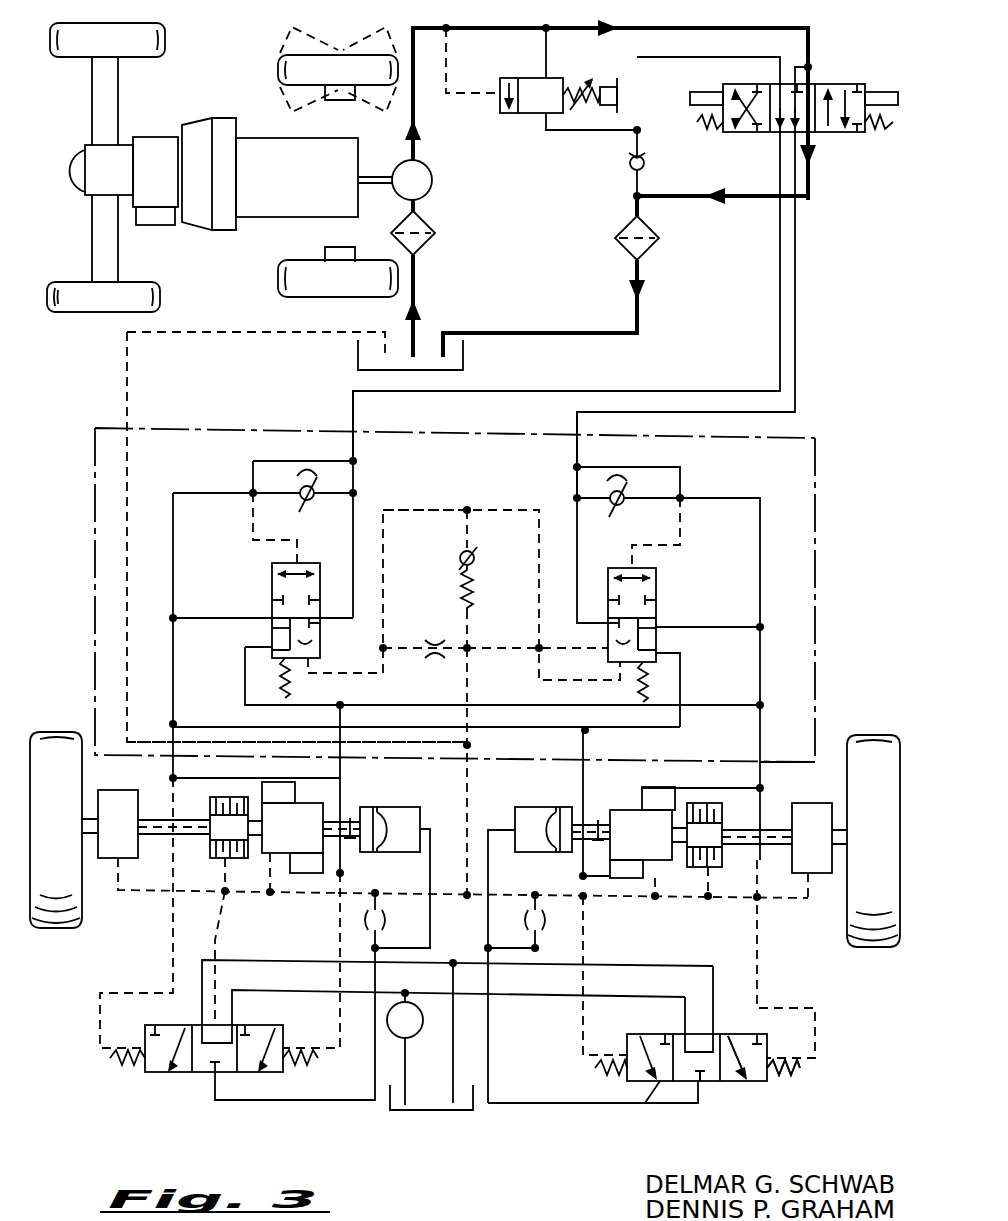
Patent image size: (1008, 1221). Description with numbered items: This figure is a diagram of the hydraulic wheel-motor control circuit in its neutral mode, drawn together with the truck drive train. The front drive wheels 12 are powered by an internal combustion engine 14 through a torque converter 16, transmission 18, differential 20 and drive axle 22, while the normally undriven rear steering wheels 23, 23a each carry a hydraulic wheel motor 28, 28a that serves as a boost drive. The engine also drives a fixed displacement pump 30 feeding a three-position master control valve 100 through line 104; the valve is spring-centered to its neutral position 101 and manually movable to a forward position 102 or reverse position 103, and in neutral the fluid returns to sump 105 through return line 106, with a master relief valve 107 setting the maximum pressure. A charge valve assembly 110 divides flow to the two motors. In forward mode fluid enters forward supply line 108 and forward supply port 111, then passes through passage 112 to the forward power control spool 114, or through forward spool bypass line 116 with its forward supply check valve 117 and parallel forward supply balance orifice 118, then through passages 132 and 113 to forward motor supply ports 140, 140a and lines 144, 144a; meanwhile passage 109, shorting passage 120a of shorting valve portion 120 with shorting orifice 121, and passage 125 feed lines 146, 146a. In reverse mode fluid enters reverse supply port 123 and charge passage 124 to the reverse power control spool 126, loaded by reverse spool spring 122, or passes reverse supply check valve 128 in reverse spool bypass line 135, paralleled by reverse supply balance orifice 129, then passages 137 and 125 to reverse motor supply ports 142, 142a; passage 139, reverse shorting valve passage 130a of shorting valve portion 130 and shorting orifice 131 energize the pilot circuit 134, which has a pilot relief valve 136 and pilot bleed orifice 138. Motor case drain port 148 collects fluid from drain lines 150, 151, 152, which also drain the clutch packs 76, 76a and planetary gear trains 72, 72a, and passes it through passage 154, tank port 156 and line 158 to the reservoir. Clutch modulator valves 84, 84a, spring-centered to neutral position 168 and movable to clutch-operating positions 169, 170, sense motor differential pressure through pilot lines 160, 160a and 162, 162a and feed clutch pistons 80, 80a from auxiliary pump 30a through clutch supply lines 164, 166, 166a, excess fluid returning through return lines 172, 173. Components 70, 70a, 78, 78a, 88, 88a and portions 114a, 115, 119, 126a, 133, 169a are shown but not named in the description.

The front drive wheels 12 is at (92, 312).
The internal combustion engine 14 is at (308, 189).
The torque converter 16 is at (210, 174).
The transmission 18 is at (168, 184).
The differential 20 is at (120, 184).
The drive axle 22 is at (97, 108).
The rear steering wheels 23 is at (312, 291).
The front wheel 23a is at (50, 733).
The wheel motor 28 is at (618, 808).
The left-hand wheel motor 28a is at (318, 790).
The hydraulic pump means 30 is at (433, 178).
The auxiliary pump 30a is at (412, 1034).
The clutch 70 is at (680, 876).
The clutch 70a is at (244, 870).
The planetary gear train 72 is at (815, 803).
The planetary gear train 72a is at (130, 775).
The clutch pack 76 is at (712, 868).
The clutch pack 76a is at (212, 855).
The pressure sensing device 78 is at (581, 815).
The pressure sensing device 78a is at (366, 815).
The right-hand clutch piston 80 is at (531, 808).
The left-hand clutch piston 80a is at (410, 806).
The clutch modulator valve 84 is at (738, 1100).
The clutch modulator valve 84a is at (172, 1080).
The orifice 88 is at (576, 858).
The orifice 88a is at (360, 860).
The master control valve 100 is at (838, 150).
The neutral position 101 is at (778, 133).
The forward position 102 is at (846, 134).
The reverse position 103 is at (742, 133).
The line 104 is at (665, 28).
The sump 105 is at (462, 363).
The return line 106 is at (638, 322).
The master relief valve 107 is at (530, 115).
The forward supply line 108 is at (795, 360).
The passage 109 is at (742, 640).
The charge valve assembly 110 is at (815, 560).
The forward supply port 111 is at (577, 413).
The passage 112 is at (578, 532).
The passage 113 is at (708, 706).
The forward power control valve spool 114 is at (608, 598).
The valve spool 114a is at (656, 580).
The pilot line 115 is at (683, 546).
The forward spool bypass line 116 is at (703, 500).
The forward supply check valve 117 is at (630, 512).
The forward supply balance orifice 118 is at (617, 455).
The spring 119 is at (640, 695).
The shorting valve portion 120 is at (660, 647).
The shorting passage 120a is at (656, 622).
The shorting orifice 121 is at (608, 646).
The reverse spool spring 122 is at (289, 689).
The reverse supply port 123 is at (353, 432).
The charge passage 124 is at (355, 538).
The passage 125 is at (625, 732).
The reverse power control spool 126 is at (333, 563).
The valve spool 126a is at (280, 566).
The reverse supply check valve 128 is at (315, 489).
The reverse supply balance orifice 129 is at (307, 452).
The shorting valve portion 130 is at (322, 632).
The shorting valve passage 130a is at (272, 631).
The shorting orifice 131 is at (316, 660).
The passage 132 is at (760, 660).
The line 133 is at (780, 365).
The pilot circuit 134 is at (455, 502).
The reverse spool bypass line 135 is at (210, 495).
The pilot relief valve 136 is at (477, 555).
The passage 137 is at (176, 652).
The pilot bleed orifice 138 is at (440, 642).
The passage 139 is at (242, 618).
The forward motor supply port 140 is at (760, 765).
The forward motor supply port 140a is at (342, 758).
The reverse motor supply port 142 is at (586, 765).
The reverse motor supply port 142a is at (180, 755).
The forward motor supply line 144 is at (686, 788).
The forward motor supply line 144a is at (300, 888).
The reverse motor supply line 146 is at (610, 877).
The reverse motor supply line 146a is at (200, 778).
The motor case drain port 148 is at (468, 755).
The motor case drain line 150 is at (685, 903).
The motor case drain line 151 is at (230, 905).
The motor case drain line 152 is at (466, 848).
The passage 154 is at (440, 740).
The motor case drain tank port 156 is at (130, 430).
The line 158 is at (182, 343).
The pilot line 160 is at (757, 976).
The pilot line 160a is at (340, 938).
The pilot line 162 is at (583, 1022).
The pilot line 162a is at (165, 985).
The clutch supply line 164 is at (600, 997).
The clutch supply line 166 is at (530, 1103).
The clutch supply line 166a is at (302, 1100).
The neutral position 168 is at (703, 1083).
The clutch-operating position 169 is at (766, 1081).
The valve position 169a is at (740, 1045).
The clutch-operating position 170 is at (660, 1083).
The clutch fluid return line 172 is at (396, 968).
The clutch fluid return line 173 is at (455, 1058).